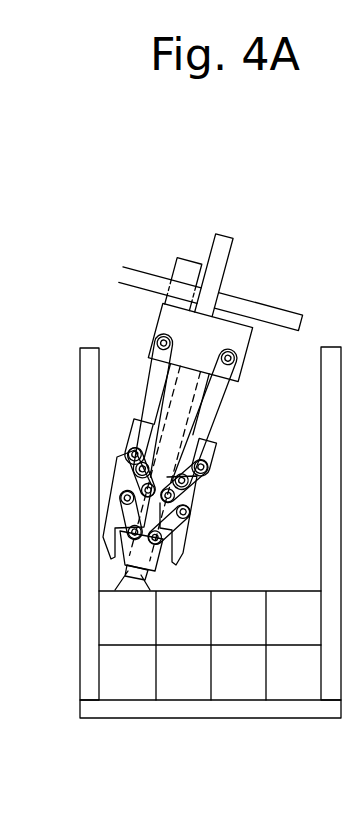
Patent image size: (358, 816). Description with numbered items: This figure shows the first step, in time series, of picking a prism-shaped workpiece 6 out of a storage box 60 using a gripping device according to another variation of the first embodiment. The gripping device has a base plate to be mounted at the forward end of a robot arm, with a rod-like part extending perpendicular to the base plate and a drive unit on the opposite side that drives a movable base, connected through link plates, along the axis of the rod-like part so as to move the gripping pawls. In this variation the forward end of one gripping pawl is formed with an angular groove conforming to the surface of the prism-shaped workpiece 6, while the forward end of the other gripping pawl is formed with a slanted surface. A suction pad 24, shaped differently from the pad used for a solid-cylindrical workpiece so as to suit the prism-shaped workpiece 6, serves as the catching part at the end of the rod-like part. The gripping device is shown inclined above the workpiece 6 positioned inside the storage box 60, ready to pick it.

The prism-shaped workpiece 6 is at (110, 618).
The suction pad 24 is at (143, 587).
The storage box 60 is at (93, 497).